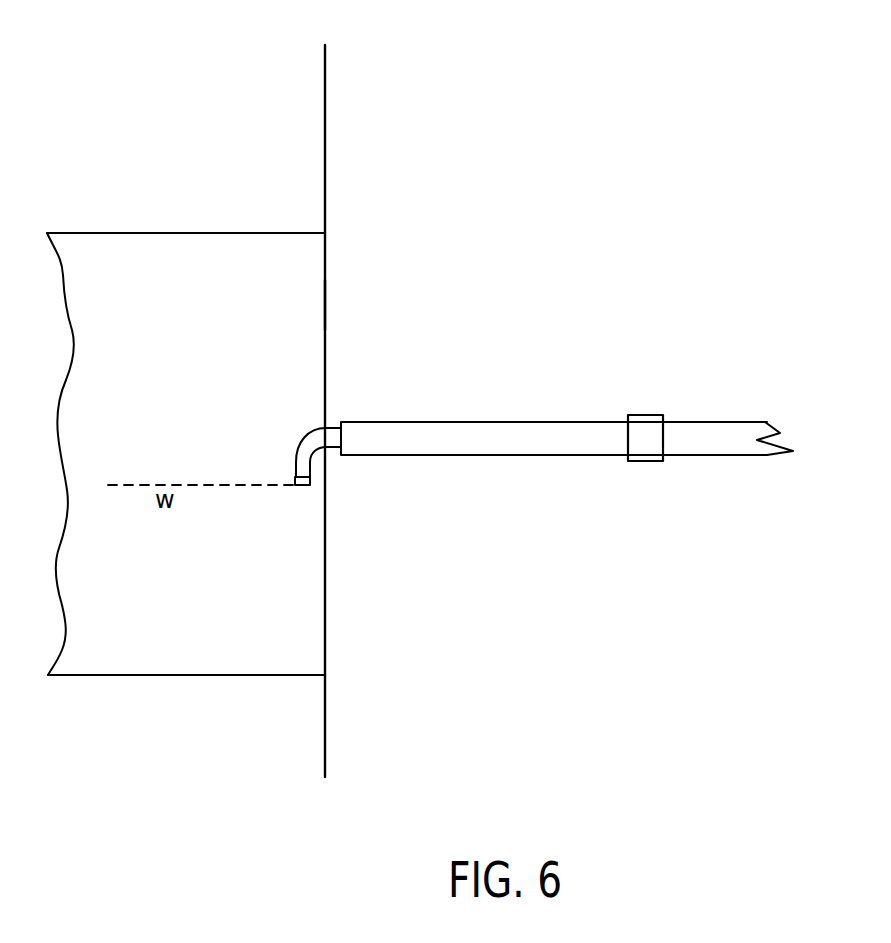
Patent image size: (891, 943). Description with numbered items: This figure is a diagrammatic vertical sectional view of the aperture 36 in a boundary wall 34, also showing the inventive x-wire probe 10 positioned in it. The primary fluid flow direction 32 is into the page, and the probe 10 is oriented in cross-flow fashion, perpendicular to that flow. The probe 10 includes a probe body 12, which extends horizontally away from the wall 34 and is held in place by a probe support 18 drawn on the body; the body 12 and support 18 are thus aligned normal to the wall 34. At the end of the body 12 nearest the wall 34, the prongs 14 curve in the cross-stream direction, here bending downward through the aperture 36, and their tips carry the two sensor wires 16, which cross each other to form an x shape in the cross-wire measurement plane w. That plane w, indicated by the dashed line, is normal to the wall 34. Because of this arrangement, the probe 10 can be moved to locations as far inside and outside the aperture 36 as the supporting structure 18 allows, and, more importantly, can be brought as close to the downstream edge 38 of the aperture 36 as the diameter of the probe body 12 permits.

The x-wire probe 10 is at (549, 463).
The probe body 12 is at (427, 421).
The prongs 14 is at (312, 430).
The sensor wires 16 is at (297, 487).
The probe support 18 is at (763, 458).
The primary fluid flow direction 32 is at (546, 680).
The wall 34 is at (331, 102).
The aperture 36 is at (167, 647).
The downstream edge 38 is at (325, 305).